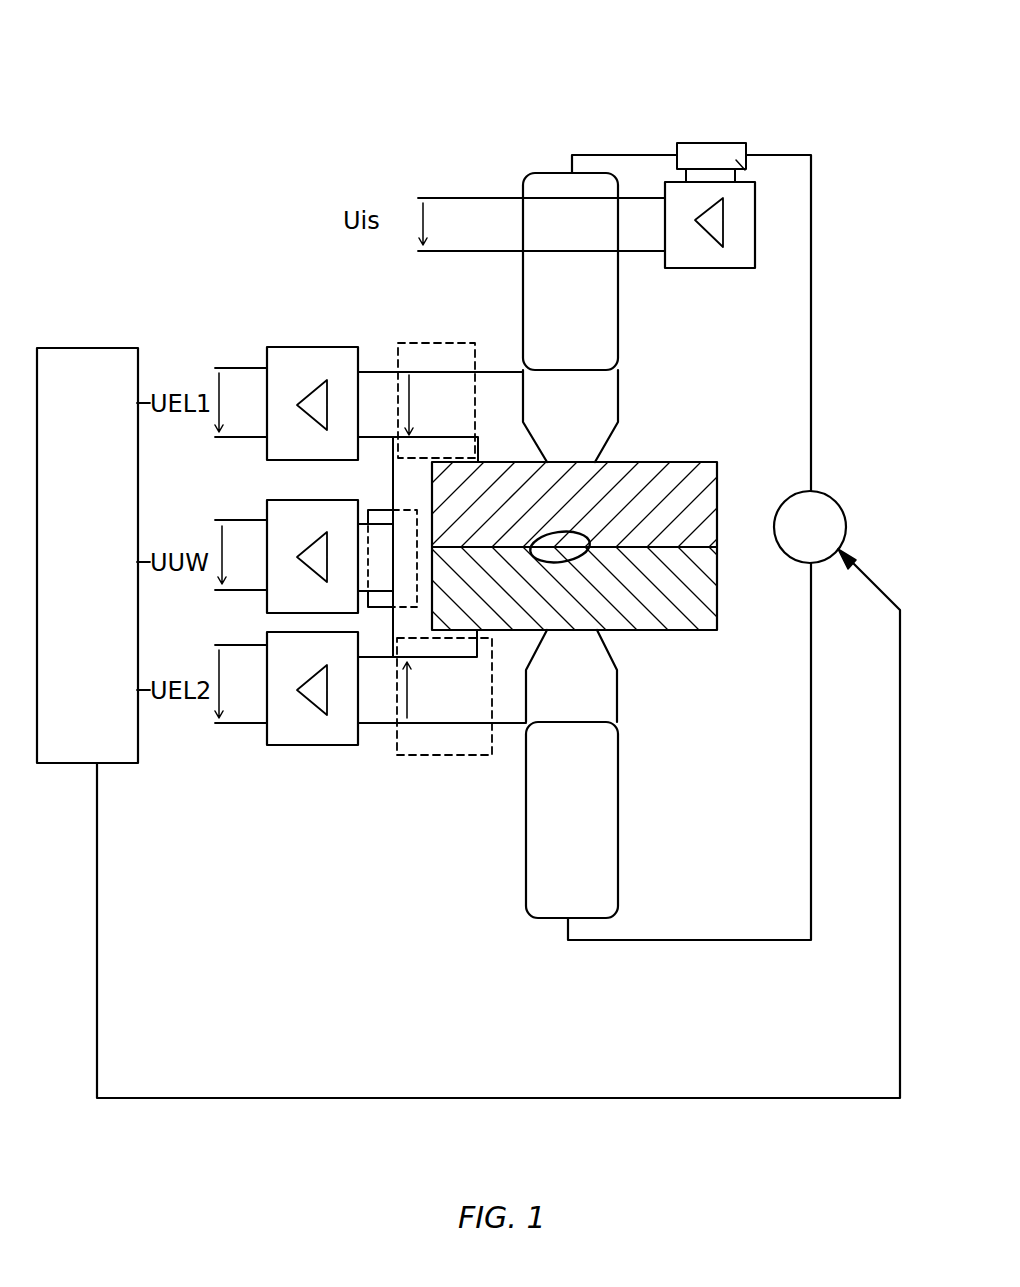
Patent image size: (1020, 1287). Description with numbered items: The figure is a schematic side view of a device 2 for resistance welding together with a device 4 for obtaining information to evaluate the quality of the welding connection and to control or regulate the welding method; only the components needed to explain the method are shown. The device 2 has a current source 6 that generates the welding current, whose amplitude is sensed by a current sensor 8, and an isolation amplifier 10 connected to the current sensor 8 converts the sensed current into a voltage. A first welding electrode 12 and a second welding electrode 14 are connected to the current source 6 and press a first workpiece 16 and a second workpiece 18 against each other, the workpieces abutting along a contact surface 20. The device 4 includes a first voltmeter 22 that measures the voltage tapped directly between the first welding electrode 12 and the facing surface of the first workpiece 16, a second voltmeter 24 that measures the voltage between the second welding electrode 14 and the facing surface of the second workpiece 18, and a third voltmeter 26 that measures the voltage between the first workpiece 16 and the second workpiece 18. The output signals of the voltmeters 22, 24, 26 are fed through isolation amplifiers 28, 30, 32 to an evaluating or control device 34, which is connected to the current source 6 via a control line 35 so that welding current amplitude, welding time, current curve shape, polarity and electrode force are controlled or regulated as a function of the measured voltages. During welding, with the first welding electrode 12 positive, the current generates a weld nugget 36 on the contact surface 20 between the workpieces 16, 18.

The device for resistance welding 2 is at (648, 96).
The device for obtaining information 4 is at (304, 299).
The current source 6 is at (848, 526).
The current sensor 8 is at (735, 143).
The isolation amplifier 10 is at (703, 268).
The first welding electrode 12 is at (620, 357).
The second welding electrode 14 is at (620, 694).
The first workpiece 16 is at (656, 463).
The second workpiece 18 is at (652, 618).
The contact surface 20 is at (606, 537).
The first voltmeter 22 is at (437, 342).
The second voltmeter 24 is at (440, 755).
The third voltmeter 26 is at (378, 507).
The isolation amplifier 28 is at (318, 347).
The isolation amplifier 30 is at (313, 490).
The isolation amplifier 32 is at (297, 745).
The control device 34 is at (95, 347).
The control line 35 is at (490, 1103).
The weld nugget 36 is at (567, 533).